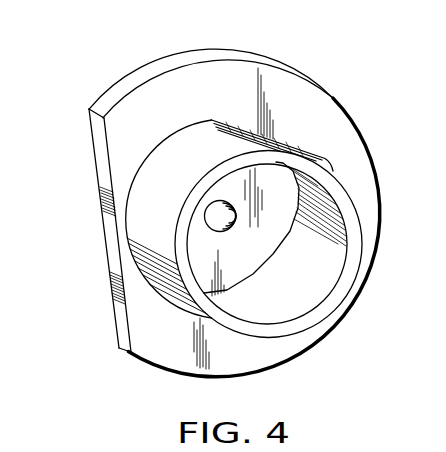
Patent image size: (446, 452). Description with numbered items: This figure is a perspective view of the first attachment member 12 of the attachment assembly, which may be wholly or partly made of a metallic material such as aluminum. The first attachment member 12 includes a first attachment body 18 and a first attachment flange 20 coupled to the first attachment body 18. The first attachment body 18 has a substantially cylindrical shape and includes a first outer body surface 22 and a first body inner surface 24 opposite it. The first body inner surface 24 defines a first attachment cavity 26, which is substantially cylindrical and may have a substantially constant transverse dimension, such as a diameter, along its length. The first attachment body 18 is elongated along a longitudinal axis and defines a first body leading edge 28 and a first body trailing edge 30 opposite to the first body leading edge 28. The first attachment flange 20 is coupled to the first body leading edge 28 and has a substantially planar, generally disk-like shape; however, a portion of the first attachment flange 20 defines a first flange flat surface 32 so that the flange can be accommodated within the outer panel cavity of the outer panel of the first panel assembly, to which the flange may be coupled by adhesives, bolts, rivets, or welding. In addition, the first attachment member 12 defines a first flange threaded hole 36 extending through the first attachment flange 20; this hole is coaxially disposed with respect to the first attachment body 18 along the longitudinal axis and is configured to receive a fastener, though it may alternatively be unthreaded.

The first attachment member 12 is at (143, 73).
The first attachment body 18 is at (152, 251).
The first attachment flange 20 is at (233, 68).
The first outer body surface 22 is at (168, 190).
The first body inner surface 24 is at (328, 196).
The first attachment cavity 26 is at (326, 280).
The first body leading edge 28 is at (241, 118).
The first body trailing edge 30 is at (327, 302).
The first flange flat surface 32 is at (100, 155).
The first flange threaded hole 36 is at (217, 204).